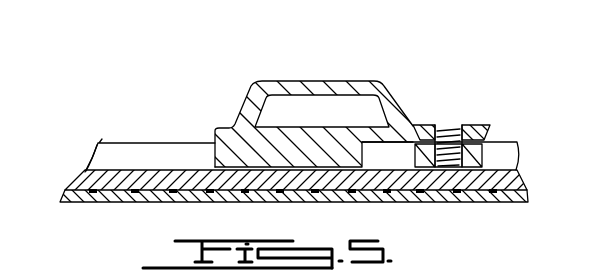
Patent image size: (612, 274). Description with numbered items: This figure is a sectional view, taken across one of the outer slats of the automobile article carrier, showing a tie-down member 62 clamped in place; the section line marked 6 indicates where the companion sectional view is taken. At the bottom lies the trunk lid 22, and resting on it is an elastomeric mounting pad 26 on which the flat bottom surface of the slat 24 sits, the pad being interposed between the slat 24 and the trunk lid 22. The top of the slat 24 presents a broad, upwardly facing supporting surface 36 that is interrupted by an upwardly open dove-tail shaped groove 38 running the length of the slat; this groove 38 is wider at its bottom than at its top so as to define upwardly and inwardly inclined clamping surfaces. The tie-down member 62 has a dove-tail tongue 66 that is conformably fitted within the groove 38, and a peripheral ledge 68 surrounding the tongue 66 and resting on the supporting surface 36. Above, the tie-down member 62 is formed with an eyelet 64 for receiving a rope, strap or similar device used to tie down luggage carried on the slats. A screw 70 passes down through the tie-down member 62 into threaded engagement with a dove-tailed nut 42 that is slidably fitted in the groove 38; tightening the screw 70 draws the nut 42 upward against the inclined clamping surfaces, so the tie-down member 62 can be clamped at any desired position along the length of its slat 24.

The trunk lid 22 is at (507, 201).
The slats 24 is at (512, 177).
The elastomeric mounting pads 26 is at (527, 190).
The supporting surface 36 is at (150, 142).
The dove-tail shaped groove 38 is at (100, 155).
The nut 42 is at (483, 160).
The tie-down member 62 is at (226, 128).
The eyelet 64 is at (342, 103).
The dove-tail tongue 66 is at (243, 160).
The peripheral ledge 68 is at (414, 127).
The screw 70 is at (452, 150).
The section line 6- 6 is at (283, 27).